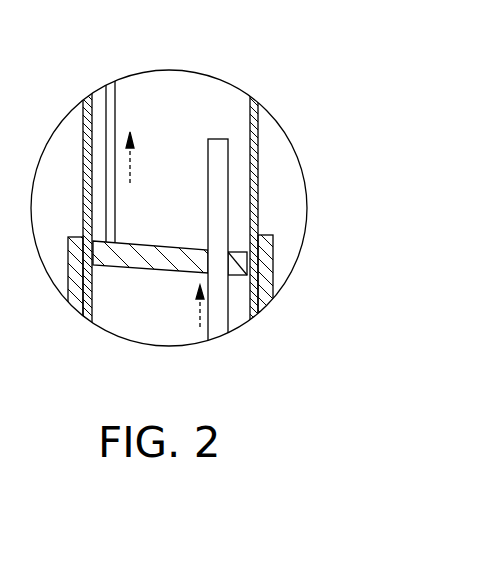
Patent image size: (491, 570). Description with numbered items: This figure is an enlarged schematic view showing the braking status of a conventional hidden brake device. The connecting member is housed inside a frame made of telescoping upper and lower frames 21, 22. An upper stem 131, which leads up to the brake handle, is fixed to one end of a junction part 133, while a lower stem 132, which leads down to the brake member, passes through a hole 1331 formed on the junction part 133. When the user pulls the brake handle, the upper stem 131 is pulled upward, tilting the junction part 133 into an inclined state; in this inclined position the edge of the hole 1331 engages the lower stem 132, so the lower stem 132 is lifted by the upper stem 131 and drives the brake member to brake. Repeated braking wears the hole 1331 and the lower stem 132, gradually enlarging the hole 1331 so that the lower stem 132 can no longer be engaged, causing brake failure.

The upper frame 21 is at (258, 117).
The lower frame 22 is at (72, 270).
The upper stem 131 is at (111, 102).
The lower stem 132 is at (218, 309).
The junction part 133 is at (142, 265).
The hole 1331 is at (229, 254).